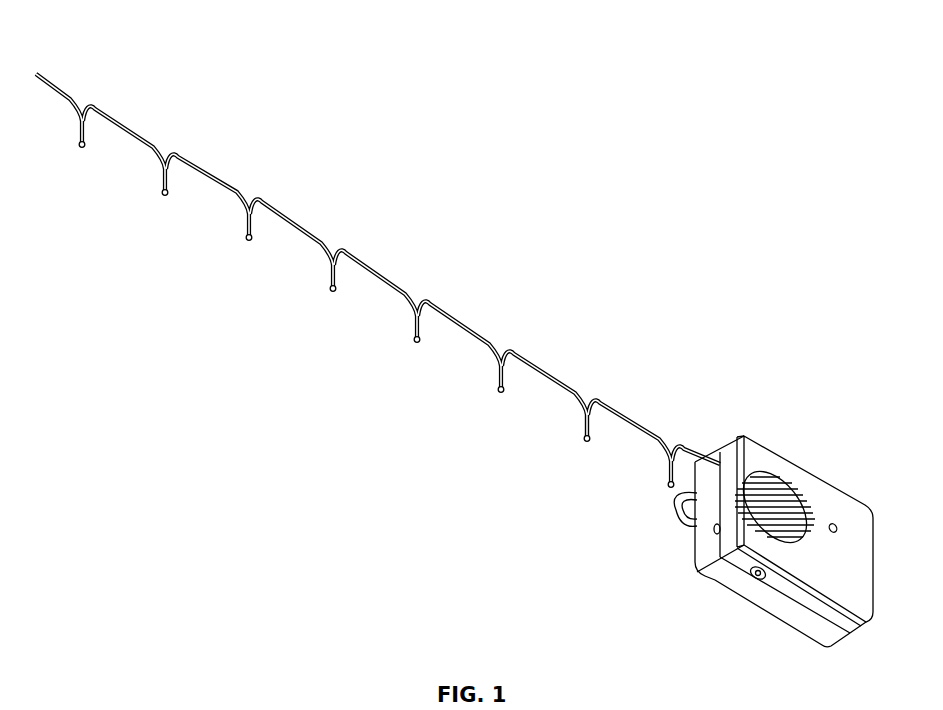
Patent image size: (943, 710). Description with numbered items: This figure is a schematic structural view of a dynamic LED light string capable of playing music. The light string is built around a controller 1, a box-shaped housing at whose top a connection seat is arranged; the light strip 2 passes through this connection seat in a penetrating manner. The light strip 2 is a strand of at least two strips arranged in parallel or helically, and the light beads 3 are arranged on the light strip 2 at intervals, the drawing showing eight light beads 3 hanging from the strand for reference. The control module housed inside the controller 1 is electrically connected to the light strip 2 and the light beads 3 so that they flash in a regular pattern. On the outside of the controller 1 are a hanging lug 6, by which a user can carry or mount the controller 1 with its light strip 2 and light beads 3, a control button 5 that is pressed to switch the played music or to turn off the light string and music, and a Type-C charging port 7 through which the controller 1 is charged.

The controller 1 is at (756, 540).
The light strip 2 is at (378, 291).
The light beads 3 is at (585, 444).
The control button 5 is at (753, 579).
The hanging lug 6 is at (676, 519).
The charging port 7 is at (714, 535).